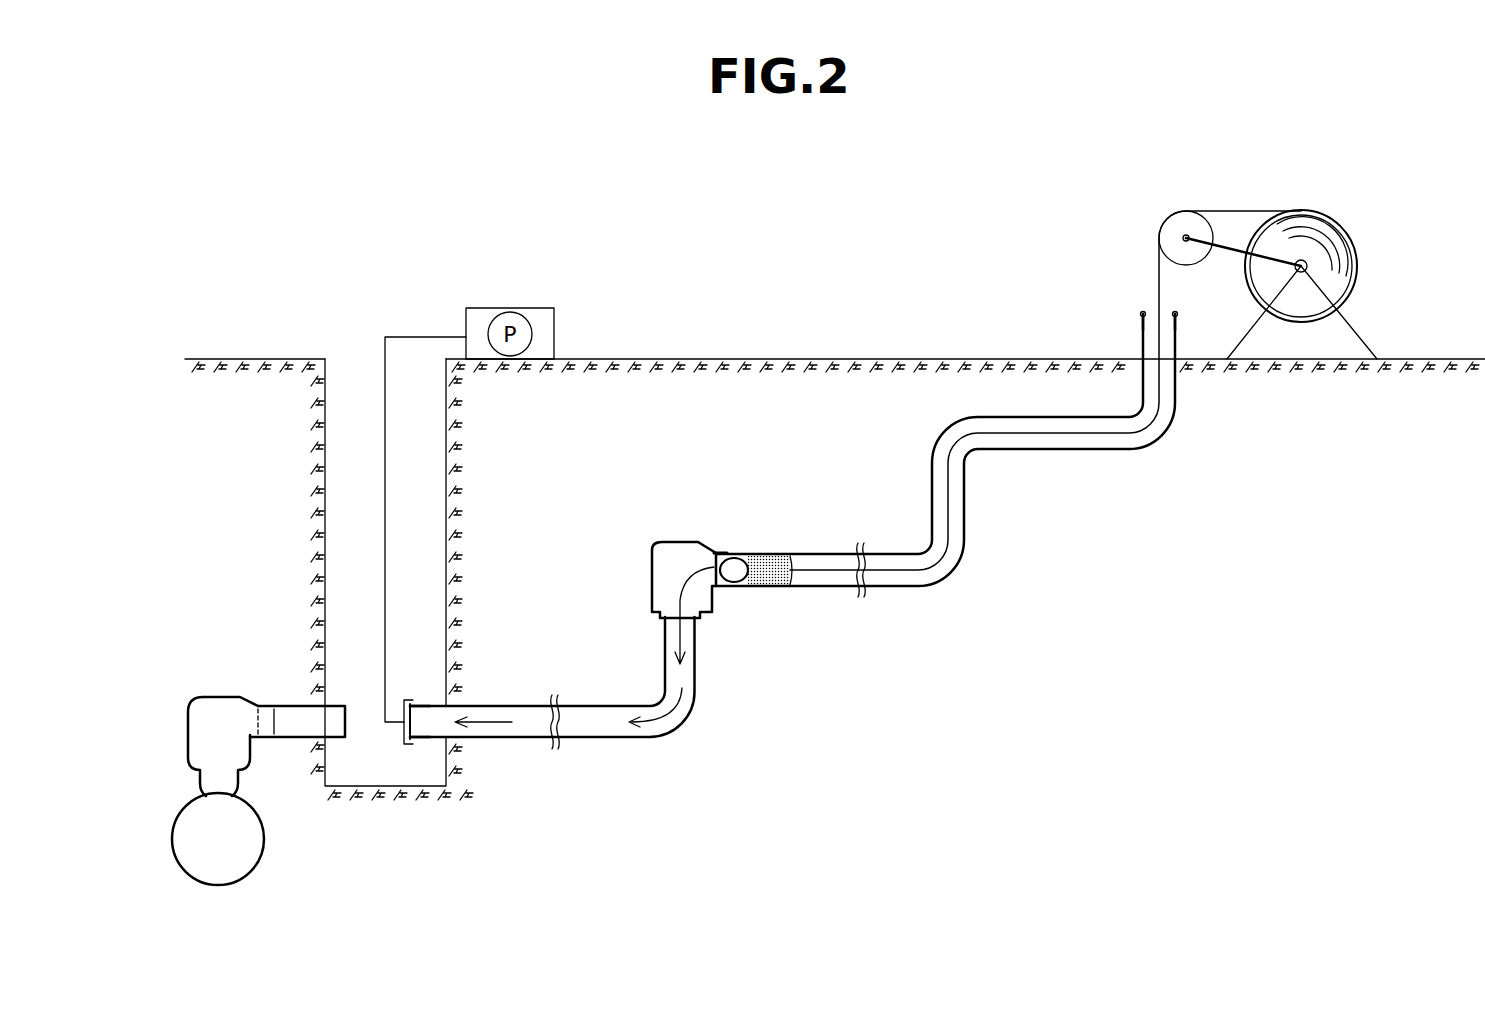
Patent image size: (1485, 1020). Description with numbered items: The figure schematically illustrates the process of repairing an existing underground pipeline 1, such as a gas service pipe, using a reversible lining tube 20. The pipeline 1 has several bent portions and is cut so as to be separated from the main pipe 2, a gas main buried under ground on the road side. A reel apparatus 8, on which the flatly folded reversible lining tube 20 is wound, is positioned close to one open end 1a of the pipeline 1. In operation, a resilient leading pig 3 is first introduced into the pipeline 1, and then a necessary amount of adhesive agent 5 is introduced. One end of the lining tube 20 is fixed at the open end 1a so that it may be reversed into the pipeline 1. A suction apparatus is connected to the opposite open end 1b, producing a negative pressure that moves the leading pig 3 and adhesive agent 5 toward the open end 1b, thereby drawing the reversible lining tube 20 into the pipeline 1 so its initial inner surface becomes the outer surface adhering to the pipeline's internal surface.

The existing underground pipeline 1 is at (965, 490).
The open end 1a is at (1141, 325).
The opposite open end 1b is at (415, 723).
The main pipe 2 is at (266, 838).
The resilient leading pig 3 is at (737, 575).
The adhesive agent 5 is at (765, 568).
The reel apparatus 8 is at (1356, 258).
The reversible lining tube 20 is at (1155, 273).